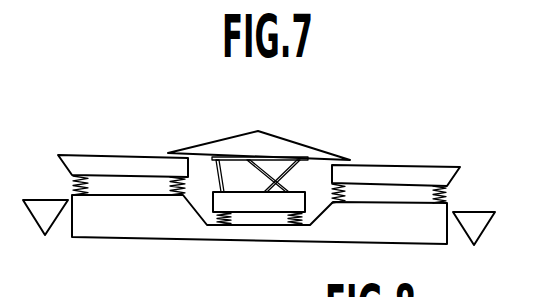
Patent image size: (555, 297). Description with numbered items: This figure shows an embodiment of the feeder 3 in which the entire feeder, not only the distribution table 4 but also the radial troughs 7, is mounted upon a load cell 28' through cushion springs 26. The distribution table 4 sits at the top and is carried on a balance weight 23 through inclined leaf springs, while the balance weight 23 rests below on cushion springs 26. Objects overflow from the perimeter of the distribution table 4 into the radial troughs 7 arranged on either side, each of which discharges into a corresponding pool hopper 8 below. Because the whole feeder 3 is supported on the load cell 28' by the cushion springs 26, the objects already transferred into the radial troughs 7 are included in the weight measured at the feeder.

The feeder 3 is at (102, 152).
The distribution table 4 is at (282, 147).
The radial trough 7 is at (398, 172).
The pool hopper 8 is at (473, 226).
The balance weight 23 is at (215, 197).
The cushion spring 26 is at (83, 179).
The load cell 28' is at (259, 246).